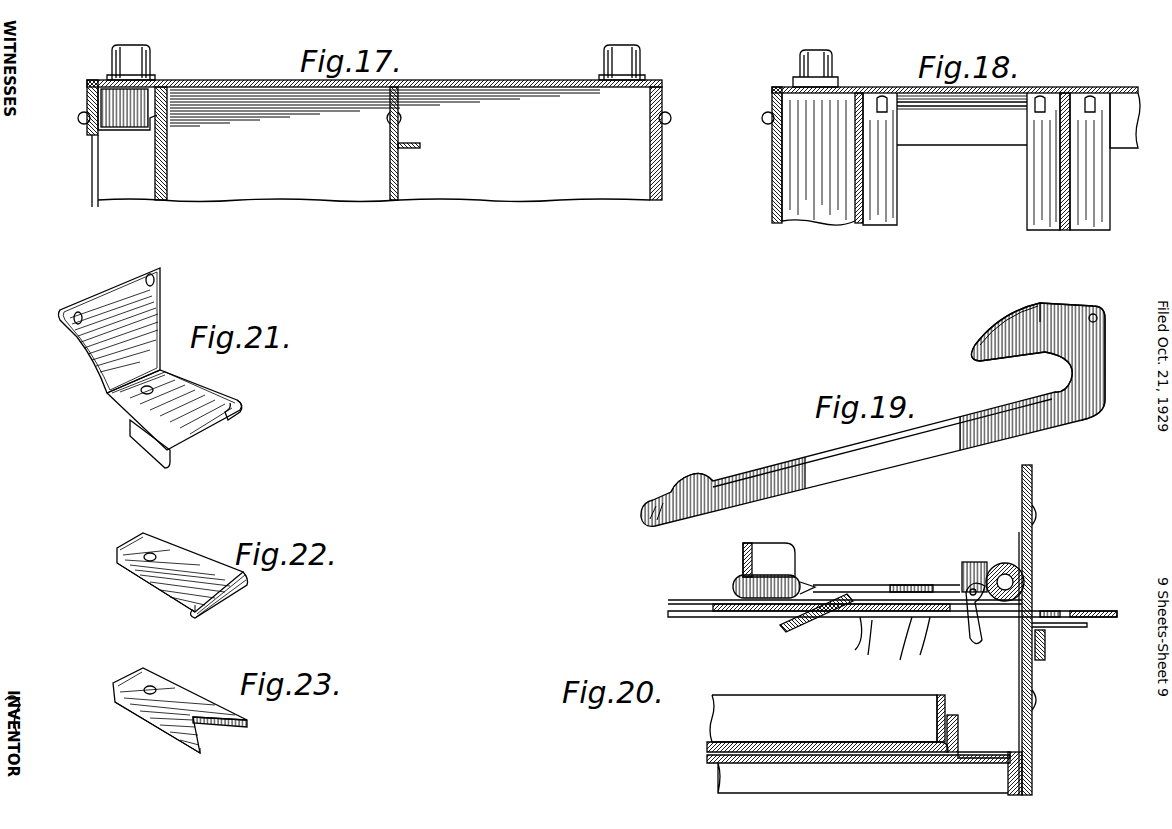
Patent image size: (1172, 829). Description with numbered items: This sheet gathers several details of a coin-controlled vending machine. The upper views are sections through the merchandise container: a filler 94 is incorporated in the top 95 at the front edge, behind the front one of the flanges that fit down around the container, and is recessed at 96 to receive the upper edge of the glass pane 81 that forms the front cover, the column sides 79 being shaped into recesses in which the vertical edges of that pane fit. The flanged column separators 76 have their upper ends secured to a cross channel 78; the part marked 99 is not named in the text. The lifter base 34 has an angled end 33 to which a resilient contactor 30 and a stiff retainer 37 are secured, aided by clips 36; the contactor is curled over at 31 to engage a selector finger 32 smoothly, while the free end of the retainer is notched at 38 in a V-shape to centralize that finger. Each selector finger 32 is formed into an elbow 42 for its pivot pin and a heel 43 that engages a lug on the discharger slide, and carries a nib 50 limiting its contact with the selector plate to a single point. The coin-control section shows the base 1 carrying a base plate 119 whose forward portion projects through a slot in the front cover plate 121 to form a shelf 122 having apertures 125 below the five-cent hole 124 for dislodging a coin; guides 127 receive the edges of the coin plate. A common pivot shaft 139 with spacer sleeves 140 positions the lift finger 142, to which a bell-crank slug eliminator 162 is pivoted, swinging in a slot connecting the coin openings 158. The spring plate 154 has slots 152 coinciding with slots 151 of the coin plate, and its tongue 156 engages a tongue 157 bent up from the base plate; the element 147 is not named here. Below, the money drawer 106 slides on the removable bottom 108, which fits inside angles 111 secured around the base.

In FIG. 20, the base 1 is at (1033, 490).
In FIG. 17, the top 95 is at (498, 82).
In FIG. 18, the top 95 is at (1066, 90).
In FIG. 17, the recess 96 is at (160, 86).
In FIG. 17, the filler 94 is at (125, 125).
In FIG. 17, the glass pane 81 is at (158, 195).
In FIG. 17, the column sides 79 is at (366, 200).
In FIG. 18, the column sides 79 is at (850, 220).
In FIG. 17, the cross channel 78 is at (420, 147).
In FIG. 18, the cross channel 78 is at (976, 140).
In FIG. 17, the end wall 99 is at (662, 175).
In FIG. 18, the column separators 76 is at (1068, 228).
In FIG. 21, the base 34 is at (108, 372).
In FIG. 21, the angled end 33 is at (195, 428).
In FIG. 21, the clips 36 is at (236, 410).
In FIG. 22, the resilient contactor 30 is at (172, 610).
In FIG. 22, the curled end 31 is at (230, 606).
In FIG. 23, the retainer 37 is at (175, 730).
In FIG. 23, the notch 38 is at (222, 730).
In FIG. 19, the heel 43 is at (1010, 300).
In FIG. 19, the elbow 42 is at (1098, 350).
In FIG. 19, the nib 50 is at (690, 474).
In FIG. 19, the selector finger 32 is at (788, 470).
In FIG. 20, the spacer sleeves 140 is at (1010, 570).
In FIG. 20, the pivot shaft 139 is at (1022, 575).
In FIG. 20, the lift finger 142 is at (925, 580).
In FIG. 20, the five-cent hole 124 is at (1066, 610).
In FIG. 20, the shelf 122 is at (1108, 622).
In FIG. 20, the apertures 125 is at (1058, 625).
In FIG. 20, the guides 127 is at (672, 600).
In FIG. 20, the knob 147 is at (745, 548).
In FIG. 20, the tongues 157 is at (812, 598).
In FIG. 20, the base plate 119 is at (732, 613).
In FIG. 20, the tongues 156 is at (790, 630).
In FIG. 20, the openings 158 is at (862, 640).
In FIG. 20, the spring plate 154 is at (870, 655).
In FIG. 20, the money drawer 106 is at (753, 704).
In FIG. 20, the slots 152 is at (933, 612).
In FIG. 20, the slots 151 is at (912, 618).
In FIG. 20, the slug eliminator 162 is at (972, 648).
In FIG. 20, the angles 111 is at (986, 752).
In FIG. 20, the front cover plate 121 is at (1034, 728).
In FIG. 20, the removable bottom 108 is at (720, 770).